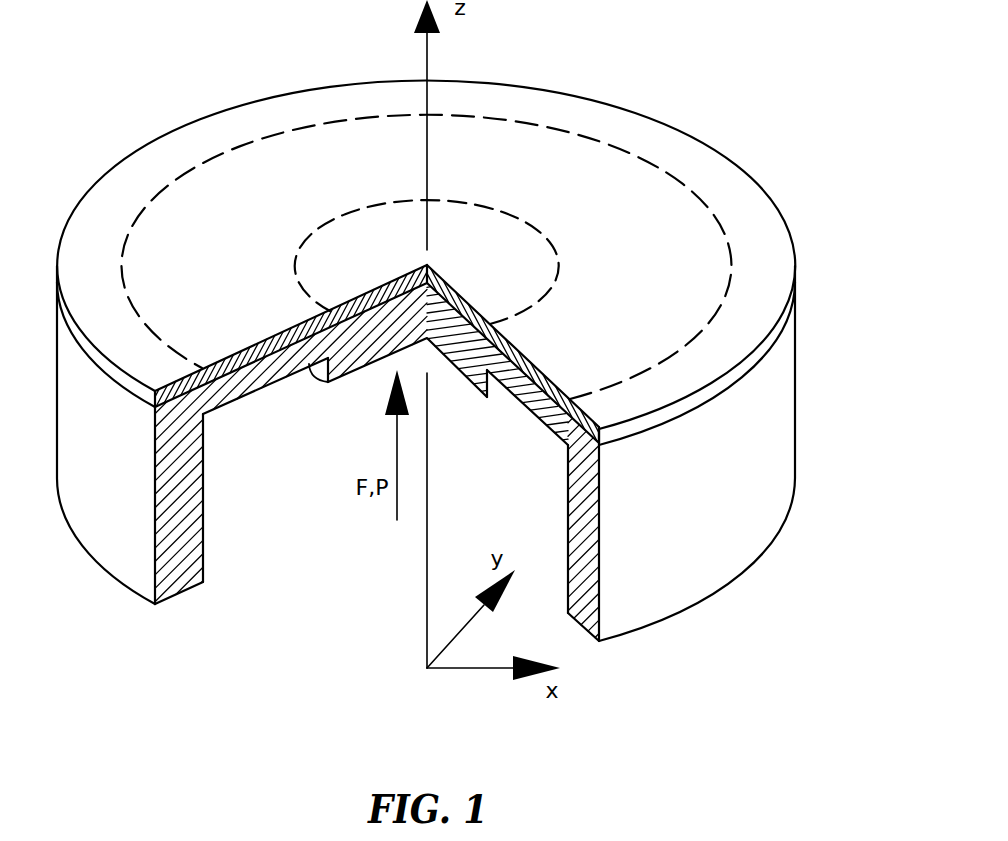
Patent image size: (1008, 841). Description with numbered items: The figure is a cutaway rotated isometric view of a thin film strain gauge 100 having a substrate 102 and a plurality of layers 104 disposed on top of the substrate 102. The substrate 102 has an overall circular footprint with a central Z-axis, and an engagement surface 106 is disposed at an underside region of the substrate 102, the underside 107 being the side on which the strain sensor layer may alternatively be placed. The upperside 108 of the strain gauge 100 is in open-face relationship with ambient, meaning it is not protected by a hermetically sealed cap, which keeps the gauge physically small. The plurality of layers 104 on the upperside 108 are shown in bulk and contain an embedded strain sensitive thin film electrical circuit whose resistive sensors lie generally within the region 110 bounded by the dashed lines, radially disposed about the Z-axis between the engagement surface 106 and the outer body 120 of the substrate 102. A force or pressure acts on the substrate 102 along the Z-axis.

The thin film strain gauge 100 is at (737, 88).
The substrate 102 is at (816, 387).
The plurality of layers 104 is at (797, 263).
The engagement surface 106 is at (367, 367).
The underside 107 is at (258, 389).
The upperside 108 is at (146, 204).
The region 110 is at (270, 247).
The outer body 120 is at (181, 592).